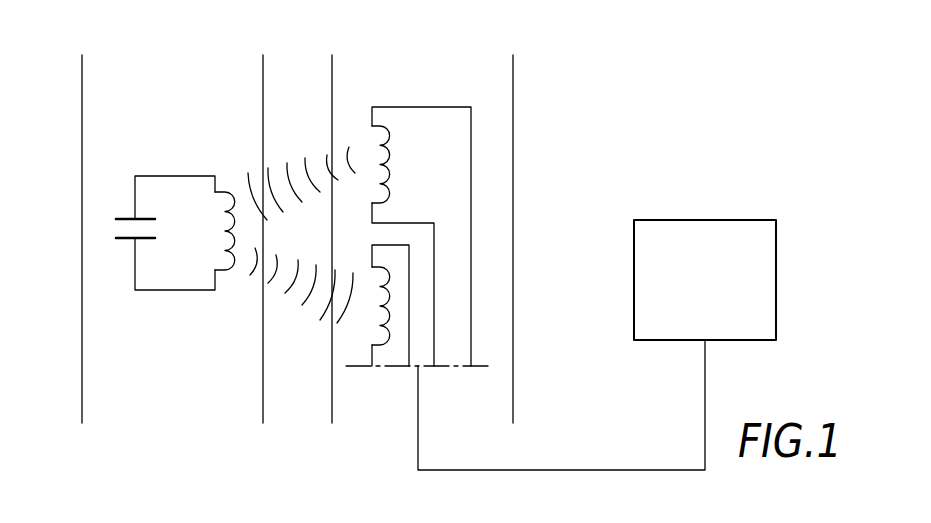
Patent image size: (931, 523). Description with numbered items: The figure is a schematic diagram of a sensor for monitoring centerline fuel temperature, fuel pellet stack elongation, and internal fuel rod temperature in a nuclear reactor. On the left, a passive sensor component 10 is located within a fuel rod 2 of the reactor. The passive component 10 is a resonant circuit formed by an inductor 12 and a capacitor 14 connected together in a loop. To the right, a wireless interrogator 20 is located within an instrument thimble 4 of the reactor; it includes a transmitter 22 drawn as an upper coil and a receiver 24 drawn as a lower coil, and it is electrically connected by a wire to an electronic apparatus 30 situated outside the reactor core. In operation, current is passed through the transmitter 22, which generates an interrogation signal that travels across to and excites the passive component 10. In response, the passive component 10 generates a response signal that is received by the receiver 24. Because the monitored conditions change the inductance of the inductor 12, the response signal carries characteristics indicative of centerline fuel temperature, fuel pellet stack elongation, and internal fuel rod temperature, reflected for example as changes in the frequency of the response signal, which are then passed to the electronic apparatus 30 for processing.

The fuel rod 2 is at (82, 82).
The instrument thimble 4 is at (513, 73).
The passive sensor component 10 is at (171, 254).
The inductor 12 is at (242, 200).
The capacitor 14 is at (122, 228).
The wireless interrogator 20 is at (410, 215).
The transmitter 22 is at (391, 152).
The receiver 24 is at (385, 327).
The electronic apparatus 30 is at (694, 220).